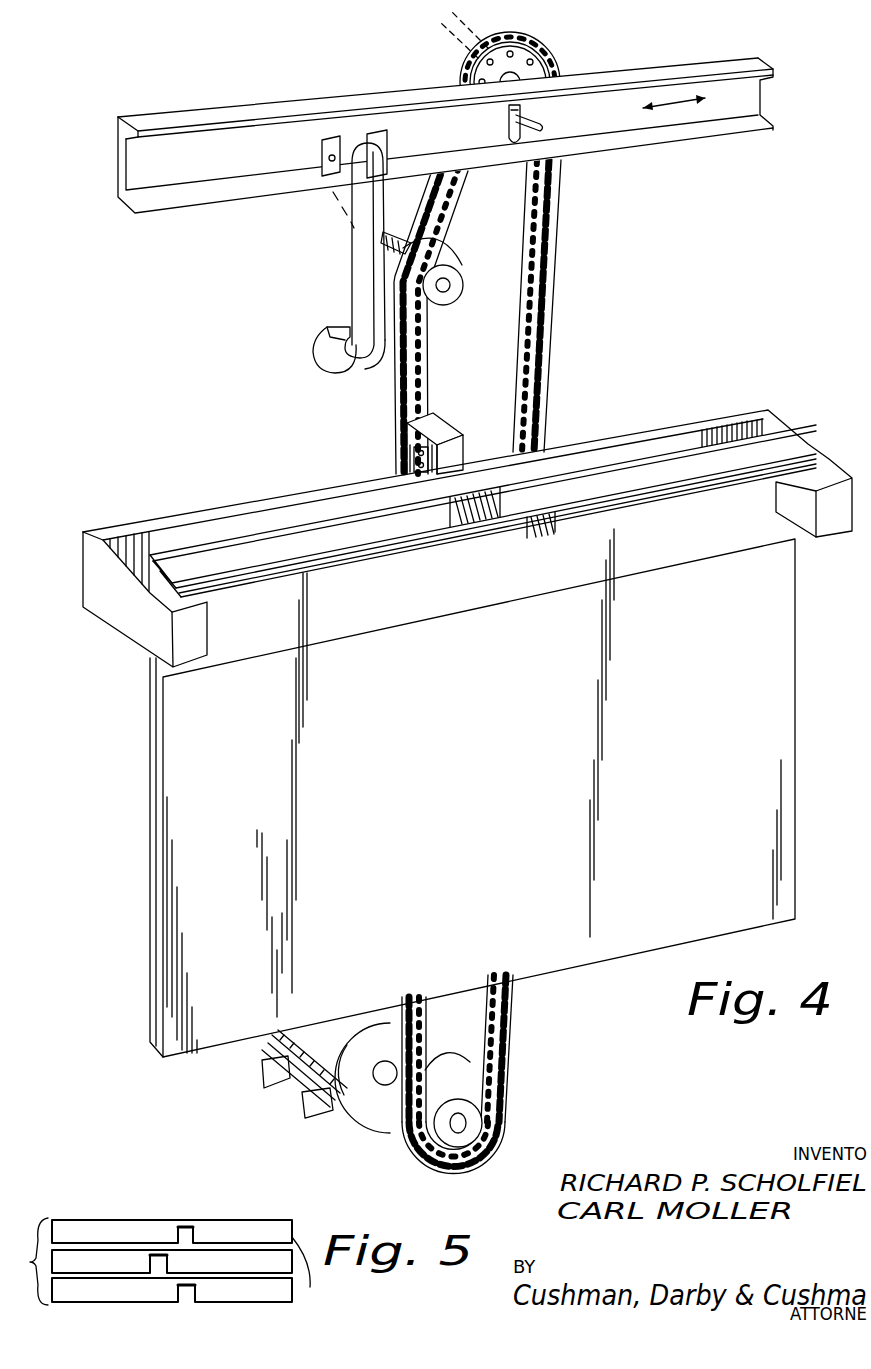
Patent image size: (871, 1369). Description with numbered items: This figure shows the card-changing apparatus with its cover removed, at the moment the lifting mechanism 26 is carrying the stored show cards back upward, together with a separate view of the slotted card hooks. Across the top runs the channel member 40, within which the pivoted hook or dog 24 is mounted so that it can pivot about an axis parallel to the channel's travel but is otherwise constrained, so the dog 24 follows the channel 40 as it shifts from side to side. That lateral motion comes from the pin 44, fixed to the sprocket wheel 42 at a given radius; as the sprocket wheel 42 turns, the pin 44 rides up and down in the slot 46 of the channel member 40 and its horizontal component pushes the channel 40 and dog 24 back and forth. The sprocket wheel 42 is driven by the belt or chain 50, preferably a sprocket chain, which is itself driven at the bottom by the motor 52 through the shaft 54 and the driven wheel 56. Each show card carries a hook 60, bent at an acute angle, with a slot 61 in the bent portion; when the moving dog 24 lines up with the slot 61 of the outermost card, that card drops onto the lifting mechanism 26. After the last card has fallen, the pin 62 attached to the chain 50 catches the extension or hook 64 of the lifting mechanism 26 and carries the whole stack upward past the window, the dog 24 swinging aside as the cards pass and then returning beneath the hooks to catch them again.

In FIG. 4, the pivoted hook or dog 24 is at (350, 362).
In FIG. 4, the lifting mechanism 26 is at (690, 427).
In FIG. 4, the channel member 40 is at (690, 60).
In FIG. 4, the sprocket wheel 42 is at (557, 51).
In FIG. 4, the pin 44 is at (541, 129).
In FIG. 4, the slot 46 is at (513, 148).
In FIG. 4, the belt or chain 50 is at (548, 310).
In FIG. 4, the motor 52 is at (353, 1088).
In FIG. 4, the shaft 54 is at (375, 1080).
In FIG. 4, the driven wheel 56 is at (447, 1078).
In FIG. 4, the hook 60 is at (413, 543).
In FIG. 5, the hook 60 is at (293, 1292).
In FIG. 4, the slot 61 is at (452, 500).
In FIG. 5, the slot 61 is at (191, 1226).
In FIG. 4, the pin 62 is at (417, 457).
In FIG. 4, the extension or hook 64 is at (443, 433).